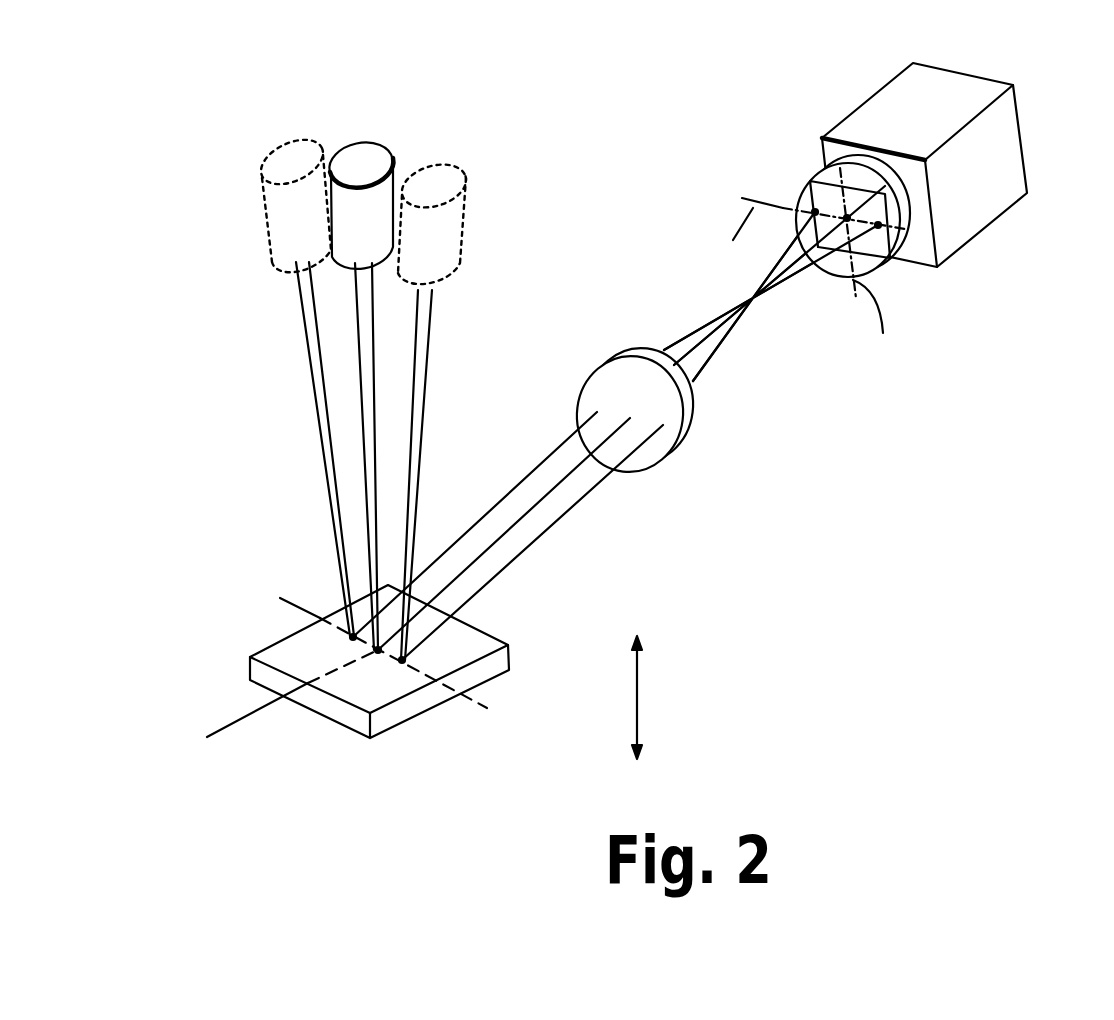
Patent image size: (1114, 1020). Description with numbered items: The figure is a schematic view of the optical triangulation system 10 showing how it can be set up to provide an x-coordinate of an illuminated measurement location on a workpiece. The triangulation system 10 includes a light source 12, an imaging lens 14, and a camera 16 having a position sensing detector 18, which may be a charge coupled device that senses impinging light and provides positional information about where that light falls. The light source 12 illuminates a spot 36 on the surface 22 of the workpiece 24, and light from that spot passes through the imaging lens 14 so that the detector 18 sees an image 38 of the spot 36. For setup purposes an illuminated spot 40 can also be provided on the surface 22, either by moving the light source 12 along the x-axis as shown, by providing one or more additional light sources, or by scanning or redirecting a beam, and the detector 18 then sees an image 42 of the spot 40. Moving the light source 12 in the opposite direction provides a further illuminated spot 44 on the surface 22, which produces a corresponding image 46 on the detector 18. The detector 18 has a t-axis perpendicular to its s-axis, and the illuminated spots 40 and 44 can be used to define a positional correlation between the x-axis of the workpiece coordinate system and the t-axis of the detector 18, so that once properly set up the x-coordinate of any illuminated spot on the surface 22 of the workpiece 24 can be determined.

The optical triangulation system 10 is at (590, 419).
The light source 12 is at (283, 140).
The imaging lens 14 is at (690, 433).
The camera 16 is at (960, 101).
The position sensing detector 18 is at (872, 207).
The surface 22 is at (285, 656).
The workpiece 24 is at (410, 710).
The spot 36 is at (378, 650).
The image 38 is at (885, 194).
The illuminated spot 40 is at (352, 636).
The image 42 is at (900, 260).
The illuminated spot 44 is at (407, 660).
The image 46 is at (808, 200).